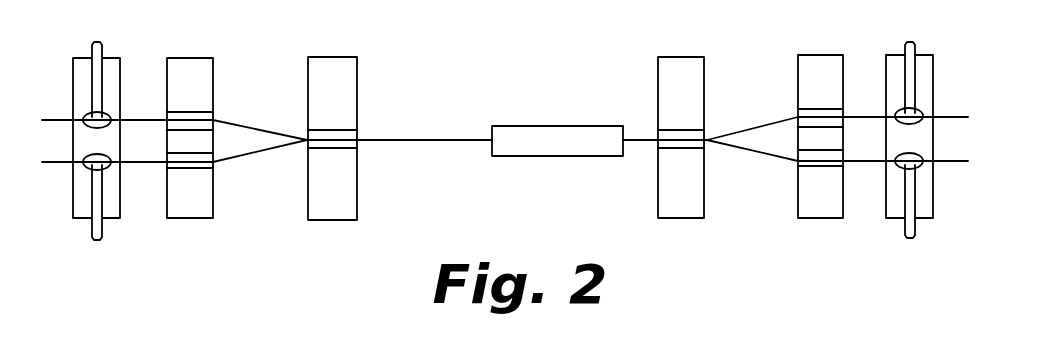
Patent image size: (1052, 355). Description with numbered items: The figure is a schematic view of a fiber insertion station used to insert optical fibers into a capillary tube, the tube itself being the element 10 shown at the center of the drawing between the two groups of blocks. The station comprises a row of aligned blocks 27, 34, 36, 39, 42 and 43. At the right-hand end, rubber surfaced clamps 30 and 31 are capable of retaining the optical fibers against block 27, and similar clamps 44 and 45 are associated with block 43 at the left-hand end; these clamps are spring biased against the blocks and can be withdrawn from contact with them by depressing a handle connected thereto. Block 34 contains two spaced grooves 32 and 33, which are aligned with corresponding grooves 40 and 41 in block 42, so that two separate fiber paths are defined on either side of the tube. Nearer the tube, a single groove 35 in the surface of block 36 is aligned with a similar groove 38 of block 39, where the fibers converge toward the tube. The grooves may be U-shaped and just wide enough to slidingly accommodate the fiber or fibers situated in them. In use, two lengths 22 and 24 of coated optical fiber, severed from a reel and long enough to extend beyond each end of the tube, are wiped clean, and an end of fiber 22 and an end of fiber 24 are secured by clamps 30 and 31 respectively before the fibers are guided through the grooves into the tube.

The fiber optic coupler 10 is at (543, 126).
The coated optical fiber 22 is at (265, 128).
The coated optical fiber 24 is at (258, 153).
The block 27 is at (895, 55).
The rubber surfaced clamp 30 is at (920, 113).
The rubber surfaced clamp 31 is at (920, 165).
The groove 32 is at (815, 110).
The groove 33 is at (822, 167).
The block 34 is at (815, 55).
The single groove 35 is at (677, 133).
The block 36 is at (678, 57).
The groove 38 is at (335, 133).
The block 39 is at (325, 57).
The groove 40 is at (193, 115).
The groove 41 is at (188, 168).
The block 42 is at (185, 58).
The block 43 is at (83, 58).
The clamp 44 is at (103, 117).
The clamp 45 is at (108, 165).